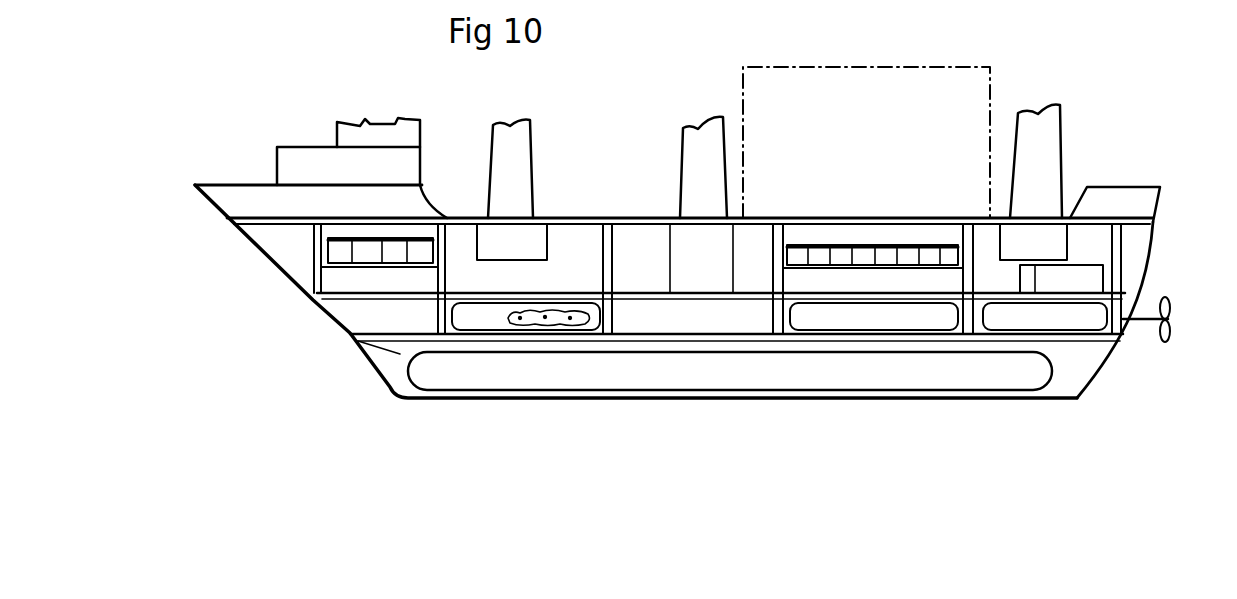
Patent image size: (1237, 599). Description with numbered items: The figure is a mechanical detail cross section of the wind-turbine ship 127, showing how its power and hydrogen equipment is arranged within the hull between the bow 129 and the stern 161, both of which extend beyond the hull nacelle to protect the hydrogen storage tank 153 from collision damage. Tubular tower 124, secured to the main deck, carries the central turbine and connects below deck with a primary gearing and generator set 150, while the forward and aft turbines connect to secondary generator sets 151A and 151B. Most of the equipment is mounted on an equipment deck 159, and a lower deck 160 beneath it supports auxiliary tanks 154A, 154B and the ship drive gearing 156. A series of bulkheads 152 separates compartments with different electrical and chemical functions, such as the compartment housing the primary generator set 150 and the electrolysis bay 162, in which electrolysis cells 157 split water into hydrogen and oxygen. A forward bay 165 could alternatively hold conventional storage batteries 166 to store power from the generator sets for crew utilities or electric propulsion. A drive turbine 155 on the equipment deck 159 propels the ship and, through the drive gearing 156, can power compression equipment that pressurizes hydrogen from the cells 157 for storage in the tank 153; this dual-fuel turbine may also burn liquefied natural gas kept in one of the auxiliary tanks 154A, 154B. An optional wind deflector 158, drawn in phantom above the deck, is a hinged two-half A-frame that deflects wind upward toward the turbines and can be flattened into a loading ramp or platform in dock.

The tubular tower 124 is at (688, 122).
The ship 127 is at (307, 162).
The bow 129 is at (270, 257).
The primary gearing and generator set 150 is at (712, 257).
The secondary generator set 151A is at (522, 242).
The secondary generator set 151B is at (1033, 243).
The bulkhead 152 is at (778, 242).
The Hydrogen storage tank 153 is at (923, 373).
The auxiliary tank 154A is at (460, 320).
The auxiliary tank 154B is at (800, 368).
The drive turbine 155 is at (1073, 283).
The ship drive gearing 156 is at (1067, 315).
The electrolysis cell 157 is at (923, 255).
The wind deflector 158 is at (937, 65).
The equipment deck 159 is at (595, 410).
The lower deck 160 is at (674, 291).
The stern 161 is at (1097, 382).
The electrolysis bay 162 is at (820, 237).
The forward bay 165 is at (333, 230).
The storage battery 166 is at (420, 253).